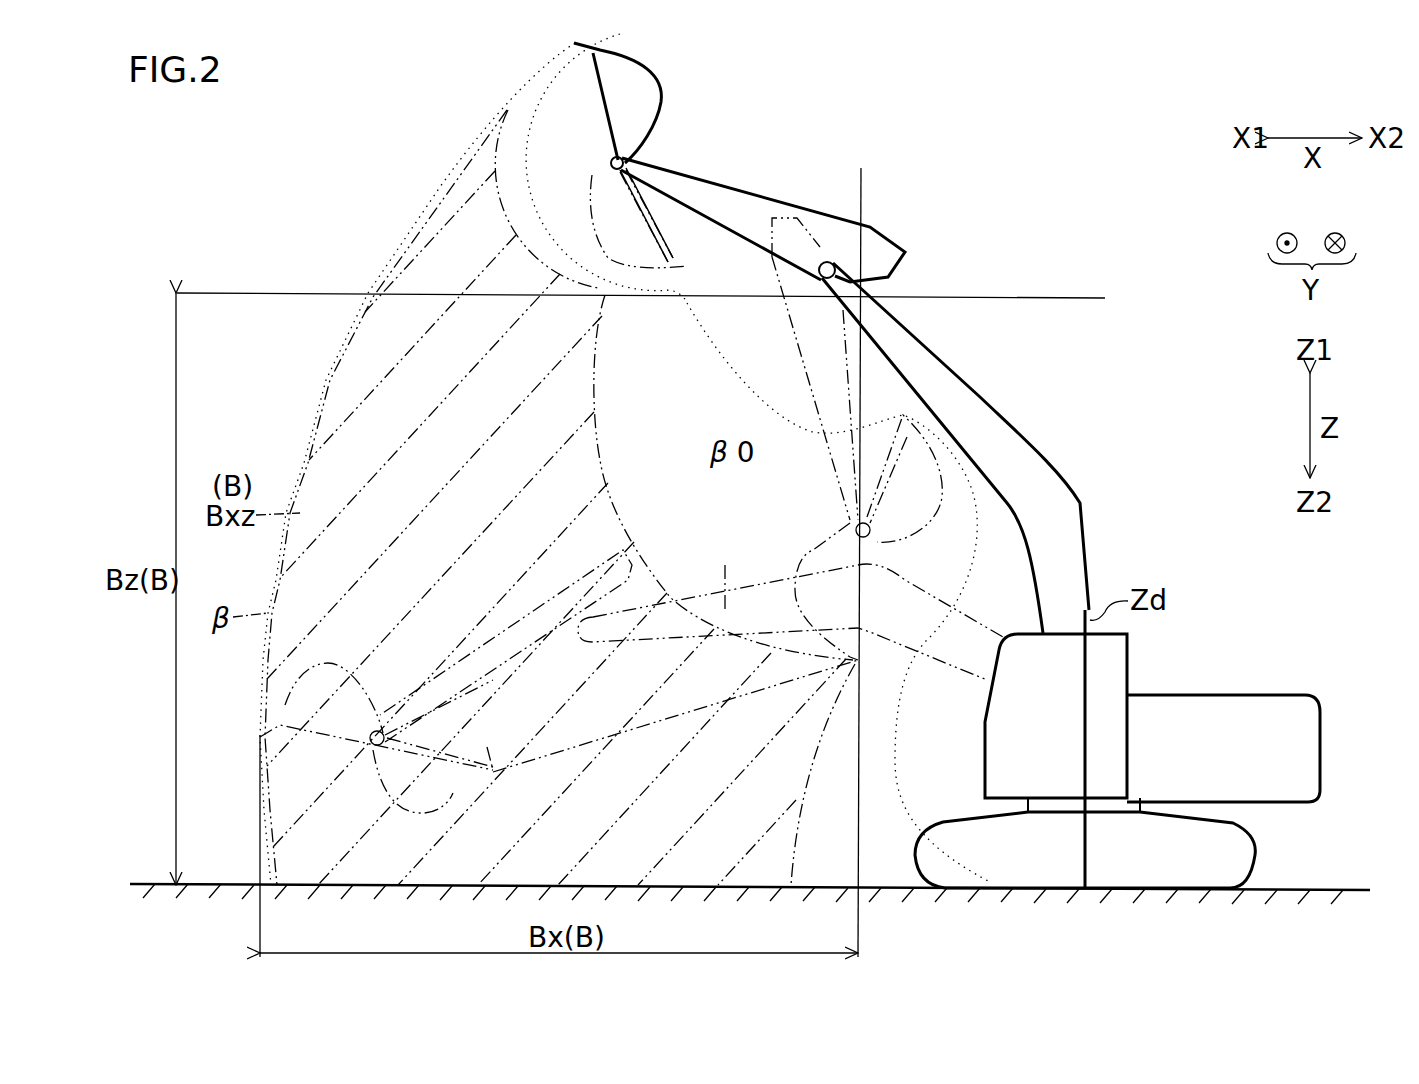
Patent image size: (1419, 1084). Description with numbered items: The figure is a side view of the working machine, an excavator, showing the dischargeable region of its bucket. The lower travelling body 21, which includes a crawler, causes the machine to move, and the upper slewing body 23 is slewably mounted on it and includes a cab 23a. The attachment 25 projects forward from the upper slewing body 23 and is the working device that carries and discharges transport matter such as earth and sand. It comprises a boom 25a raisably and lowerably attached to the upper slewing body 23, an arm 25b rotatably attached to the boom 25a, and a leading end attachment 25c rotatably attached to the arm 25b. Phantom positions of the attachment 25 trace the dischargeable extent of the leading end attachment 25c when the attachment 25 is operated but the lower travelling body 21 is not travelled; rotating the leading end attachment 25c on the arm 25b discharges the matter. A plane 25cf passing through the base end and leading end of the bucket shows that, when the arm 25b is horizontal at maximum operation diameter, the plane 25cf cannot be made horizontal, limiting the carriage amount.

The lower travelling body 21 is at (1255, 850).
The upper slewing body 23 is at (1320, 748).
The cab 23a is at (1127, 650).
The attachment 25 is at (1122, 410).
The boom 25a is at (1030, 462).
The arm 25b is at (770, 200).
The leading end attachment 25c is at (662, 96).
The plane 25cf is at (643, 217).